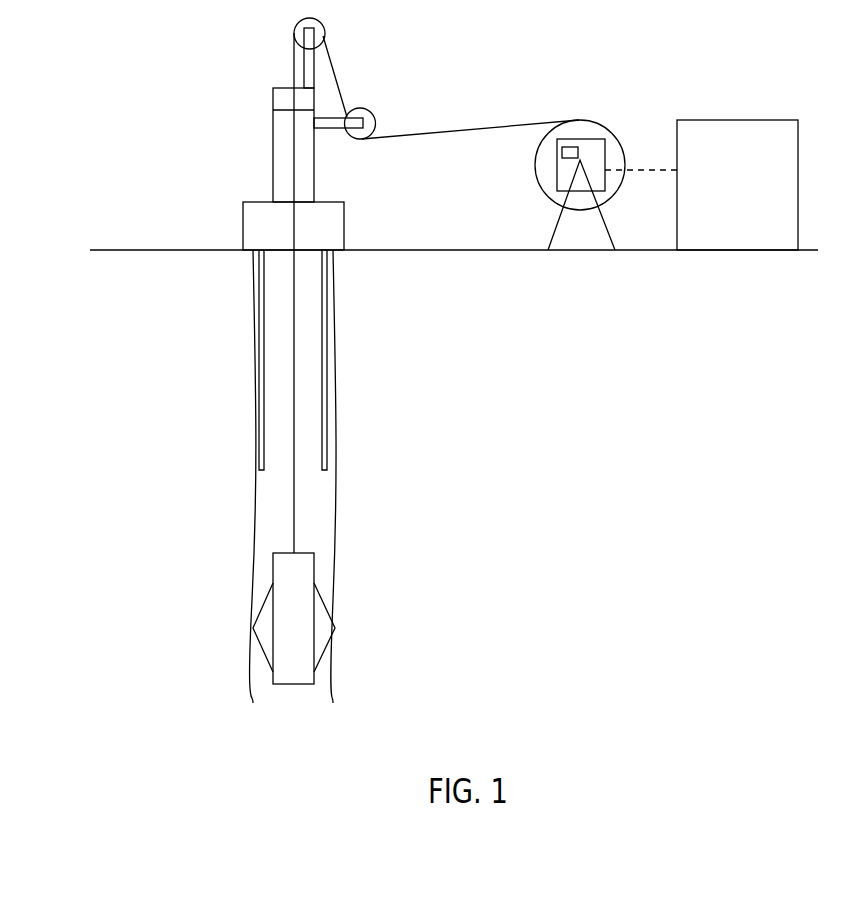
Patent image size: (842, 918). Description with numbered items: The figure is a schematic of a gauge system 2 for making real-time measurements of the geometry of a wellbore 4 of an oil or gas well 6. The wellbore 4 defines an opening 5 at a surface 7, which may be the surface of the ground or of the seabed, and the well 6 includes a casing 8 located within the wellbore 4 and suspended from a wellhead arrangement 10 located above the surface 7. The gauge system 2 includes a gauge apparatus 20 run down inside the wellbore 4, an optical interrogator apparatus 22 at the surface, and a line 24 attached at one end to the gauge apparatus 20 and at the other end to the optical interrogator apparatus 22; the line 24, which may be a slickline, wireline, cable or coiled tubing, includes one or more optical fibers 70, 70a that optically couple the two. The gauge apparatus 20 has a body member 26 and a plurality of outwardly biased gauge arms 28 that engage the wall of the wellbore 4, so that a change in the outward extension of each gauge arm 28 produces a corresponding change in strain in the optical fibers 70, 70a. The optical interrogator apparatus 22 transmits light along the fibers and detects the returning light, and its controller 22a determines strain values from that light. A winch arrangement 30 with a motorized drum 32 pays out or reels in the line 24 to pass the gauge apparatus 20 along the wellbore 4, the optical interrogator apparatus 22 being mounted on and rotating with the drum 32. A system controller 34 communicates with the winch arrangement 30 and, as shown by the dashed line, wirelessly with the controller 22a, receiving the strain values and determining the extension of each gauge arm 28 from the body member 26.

The gauge system 2 is at (628, 368).
The wellbore 4 is at (257, 515).
The opening 5 is at (280, 250).
The oil or gas well 6 is at (168, 357).
The surface 7 is at (133, 250).
The casing 8 is at (262, 412).
The wellhead arrangement 10 is at (237, 147).
The gauge apparatus 20 is at (286, 702).
The optical interrogator apparatus 22 is at (598, 139).
The controller 22a is at (567, 147).
The line 24 is at (462, 128).
The body member 26 is at (315, 563).
The gauge arms 28 is at (263, 653).
The winch arrangement 30 is at (496, 173).
The motorized drum 32 is at (538, 185).
The system controller 34 is at (743, 120).
The optical fiber 70 is at (387, 401).
The optical fiber 70a is at (295, 500).